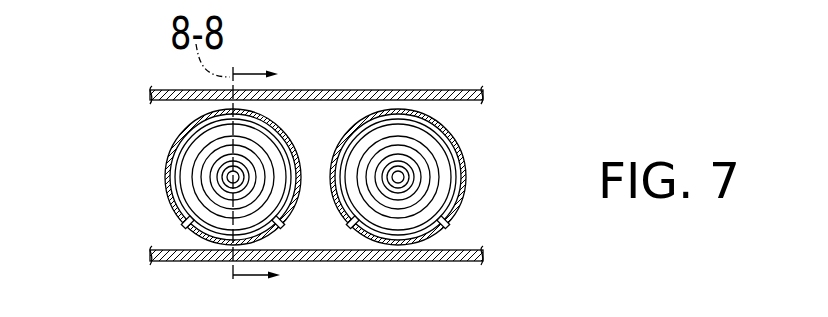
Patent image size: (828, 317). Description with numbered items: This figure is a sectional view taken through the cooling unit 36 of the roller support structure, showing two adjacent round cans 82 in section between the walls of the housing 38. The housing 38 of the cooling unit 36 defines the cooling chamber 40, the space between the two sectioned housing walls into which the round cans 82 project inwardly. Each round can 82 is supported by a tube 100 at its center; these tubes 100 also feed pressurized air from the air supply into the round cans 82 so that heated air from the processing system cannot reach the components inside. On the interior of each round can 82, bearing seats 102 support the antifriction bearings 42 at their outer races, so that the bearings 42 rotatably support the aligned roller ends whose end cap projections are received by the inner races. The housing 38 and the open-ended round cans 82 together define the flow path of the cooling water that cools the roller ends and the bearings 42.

The cooling unit 36 is at (358, 84).
The housing 38 is at (316, 147).
The cooling chamber 40 is at (330, 132).
The bearings 42 is at (179, 138).
The round cans 82 is at (187, 122).
The tubes 100 is at (226, 179).
The bearing seats 102 is at (183, 216).